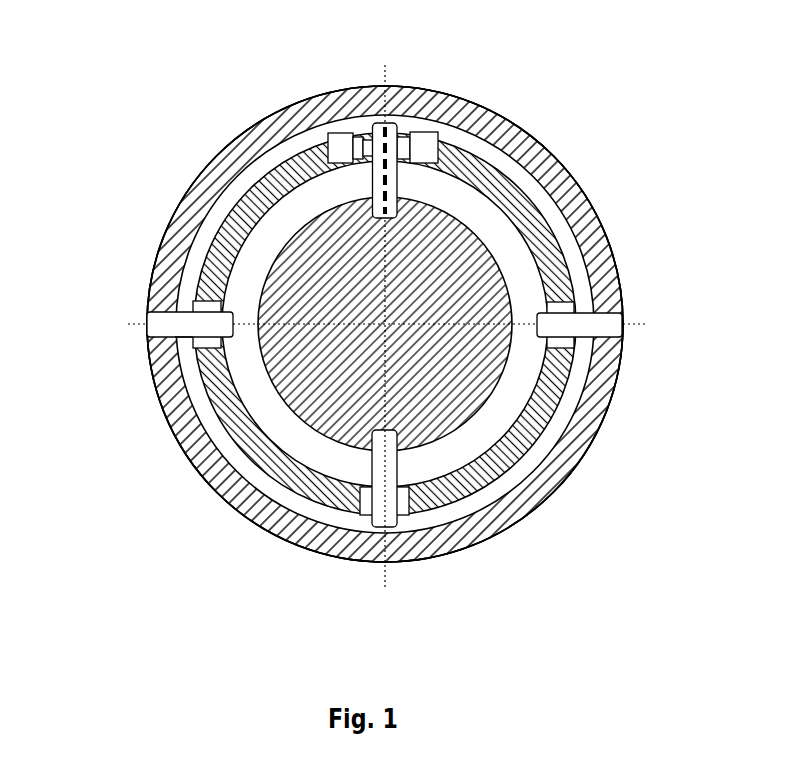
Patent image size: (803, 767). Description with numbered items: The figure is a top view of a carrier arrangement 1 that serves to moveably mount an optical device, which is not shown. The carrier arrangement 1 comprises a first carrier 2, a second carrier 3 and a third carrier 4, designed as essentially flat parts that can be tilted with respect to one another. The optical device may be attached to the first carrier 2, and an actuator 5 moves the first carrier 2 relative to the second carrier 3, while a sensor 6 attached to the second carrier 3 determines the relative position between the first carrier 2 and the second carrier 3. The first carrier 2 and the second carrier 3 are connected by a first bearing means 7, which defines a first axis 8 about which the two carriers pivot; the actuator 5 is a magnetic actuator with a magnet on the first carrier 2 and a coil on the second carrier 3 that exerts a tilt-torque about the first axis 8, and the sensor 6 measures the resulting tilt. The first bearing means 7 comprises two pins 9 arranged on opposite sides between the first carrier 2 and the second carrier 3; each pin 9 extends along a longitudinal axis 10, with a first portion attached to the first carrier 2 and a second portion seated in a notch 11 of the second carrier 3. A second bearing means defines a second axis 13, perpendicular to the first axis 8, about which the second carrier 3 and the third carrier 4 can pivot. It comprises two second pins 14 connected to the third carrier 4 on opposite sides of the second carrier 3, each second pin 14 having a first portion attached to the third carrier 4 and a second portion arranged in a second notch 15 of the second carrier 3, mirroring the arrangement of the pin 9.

The carrier arrangement 1 is at (650, 57).
The first carrier 2 is at (507, 289).
The second carrier 3 is at (533, 446).
The third carrier 4 is at (555, 496).
The actuator 5 is at (322, 150).
The sensor 6 is at (440, 146).
The first bearing means 7 is at (411, 78).
The first axis 8 is at (379, 78).
The pin 9 is at (368, 132).
The longitudinal axis 10 is at (342, 91).
The notch 11 is at (440, 132).
The second axis 13 is at (137, 327).
The second pin 14 is at (188, 334).
The second notch 15 is at (193, 348).